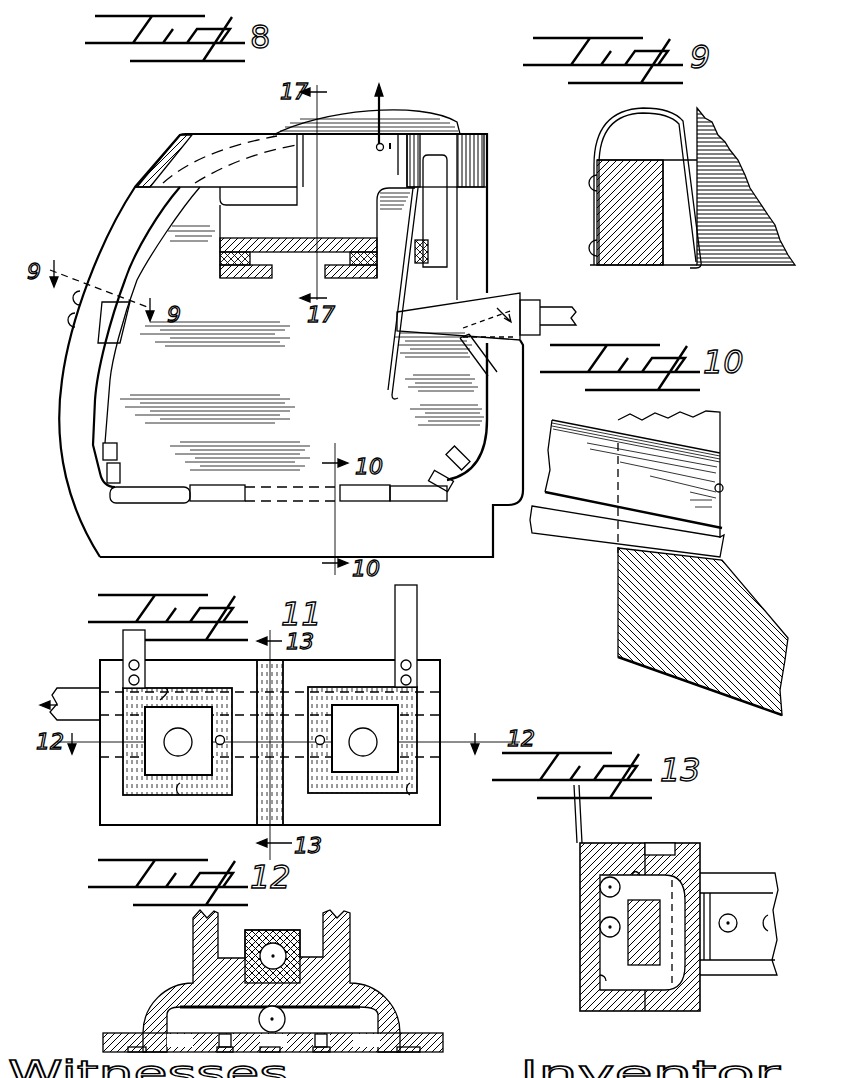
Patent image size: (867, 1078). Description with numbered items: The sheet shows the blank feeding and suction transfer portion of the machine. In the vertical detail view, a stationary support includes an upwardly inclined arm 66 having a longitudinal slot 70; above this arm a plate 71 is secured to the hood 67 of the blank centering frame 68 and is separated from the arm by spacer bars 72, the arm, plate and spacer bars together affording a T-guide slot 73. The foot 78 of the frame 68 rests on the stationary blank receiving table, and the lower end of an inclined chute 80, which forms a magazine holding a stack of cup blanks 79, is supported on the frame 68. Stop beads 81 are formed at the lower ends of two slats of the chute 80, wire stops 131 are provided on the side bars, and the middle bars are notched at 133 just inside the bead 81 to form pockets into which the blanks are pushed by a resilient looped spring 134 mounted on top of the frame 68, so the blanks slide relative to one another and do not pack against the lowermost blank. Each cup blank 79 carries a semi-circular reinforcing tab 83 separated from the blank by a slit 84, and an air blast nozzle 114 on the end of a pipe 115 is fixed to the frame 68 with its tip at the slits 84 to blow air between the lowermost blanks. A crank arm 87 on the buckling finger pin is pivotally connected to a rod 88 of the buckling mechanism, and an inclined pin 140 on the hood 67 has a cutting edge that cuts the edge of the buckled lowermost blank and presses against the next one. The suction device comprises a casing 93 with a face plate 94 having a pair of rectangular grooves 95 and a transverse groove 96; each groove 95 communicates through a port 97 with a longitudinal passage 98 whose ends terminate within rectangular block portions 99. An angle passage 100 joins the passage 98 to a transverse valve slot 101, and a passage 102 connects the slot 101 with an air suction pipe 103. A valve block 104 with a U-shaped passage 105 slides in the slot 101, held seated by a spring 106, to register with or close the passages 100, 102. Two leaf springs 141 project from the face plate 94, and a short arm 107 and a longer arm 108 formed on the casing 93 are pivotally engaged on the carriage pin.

In FIG. 8, the upwardly inclined arm 66 is at (233, 279).
In FIG. 8, the hood 67 is at (366, 139).
In FIG. 8, the frame 68 is at (76, 414).
In FIG. 9, the frame 68 is at (628, 266).
In FIG. 10, the frame 68 is at (710, 432).
In FIG. 8, the longitudinal slot 70 is at (276, 268).
In FIG. 8, the plate 71 is at (290, 240).
In FIG. 8, the spacer bars 72 is at (220, 260).
In FIG. 8, the T-guide slot 73 is at (303, 255).
In FIG. 8, the foot 78 is at (311, 448).
In FIG. 10, the foot 78 is at (750, 630).
In FIG. 8, the cup blanks 79 is at (302, 396).
In FIG. 9, the cup blanks 79 is at (733, 237).
In FIG. 8, the chute 80 is at (110, 473).
In FIG. 10, the chute 80 is at (570, 467).
In FIG. 8, the stop beads 81 is at (345, 487).
In FIG. 10, the stop beads 81 is at (725, 537).
In FIG. 8, the reinforcing tab 83 is at (460, 407).
In FIG. 8, the slit 84 is at (100, 338).
In FIG. 9, the slit 84 is at (625, 108).
In FIG. 8, the crank arm 87 is at (440, 215).
In FIG. 8, the rod 88 is at (428, 262).
In FIG. 12, the casing 93 is at (370, 995).
In FIG. 13, the casing 93 is at (607, 850).
In FIG. 11, the face plate 94 is at (420, 667).
In FIG. 12, the face plate 94 is at (430, 1033).
In FIG. 11, the rectangular grooves 95 is at (127, 783).
In FIG. 12, the rectangular grooves 95 is at (133, 1047).
In FIG. 11, the transverse groove 96 is at (258, 805).
In FIG. 12, the transverse groove 96 is at (183, 1017).
In FIG. 13, the transverse groove 96 is at (588, 884).
In FIG. 11, the port 97 is at (222, 735).
In FIG. 12, the port 97 is at (232, 1025).
In FIG. 11, the longitudinal passage 98 is at (292, 727).
In FIG. 13, the longitudinal passage 98 is at (605, 926).
In FIG. 11, the rectangular block portions 99 is at (165, 765).
In FIG. 12, the rectangular block portions 99 is at (327, 1040).
In FIG. 11, the angle passage 100 is at (283, 798).
In FIG. 12, the angle passage 100 is at (300, 1010).
In FIG. 13, the angle passage 100 is at (600, 968).
In FIG. 13, the valve slot 101 is at (667, 843).
In FIG. 11, the passage 102 is at (170, 690).
In FIG. 13, the passage 102 is at (632, 875).
In FIG. 11, the air suction pipe 103 is at (82, 700).
In FIG. 12, the valve block 104 is at (255, 932).
In FIG. 13, the valve block 104 is at (698, 865).
In FIG. 12, the U-shaped passage 105 is at (277, 950).
In FIG. 13, the U-shaped passage 105 is at (677, 913).
In FIG. 13, the spring 106 is at (711, 938).
In FIG. 12, the short arm 107 is at (193, 925).
In FIG. 13, the short arm 107 is at (753, 883).
In FIG. 12, the longer arm 108 is at (350, 923).
In FIG. 8, the air blast nozzle 114 is at (458, 316).
In FIG. 8, the pipe 115 is at (577, 286).
In FIG. 8, the wire stops 131 is at (120, 460).
In FIG. 10, the wire stops 131 is at (724, 488).
In FIG. 10, the notches 133 is at (693, 538).
In FIG. 8, the looped spring 134 is at (377, 96).
In FIG. 8, the pin 140 is at (393, 130).
In FIG. 11, the leaf springs 141 is at (125, 646).
In FIG. 13, the leaf springs 141 is at (573, 812).